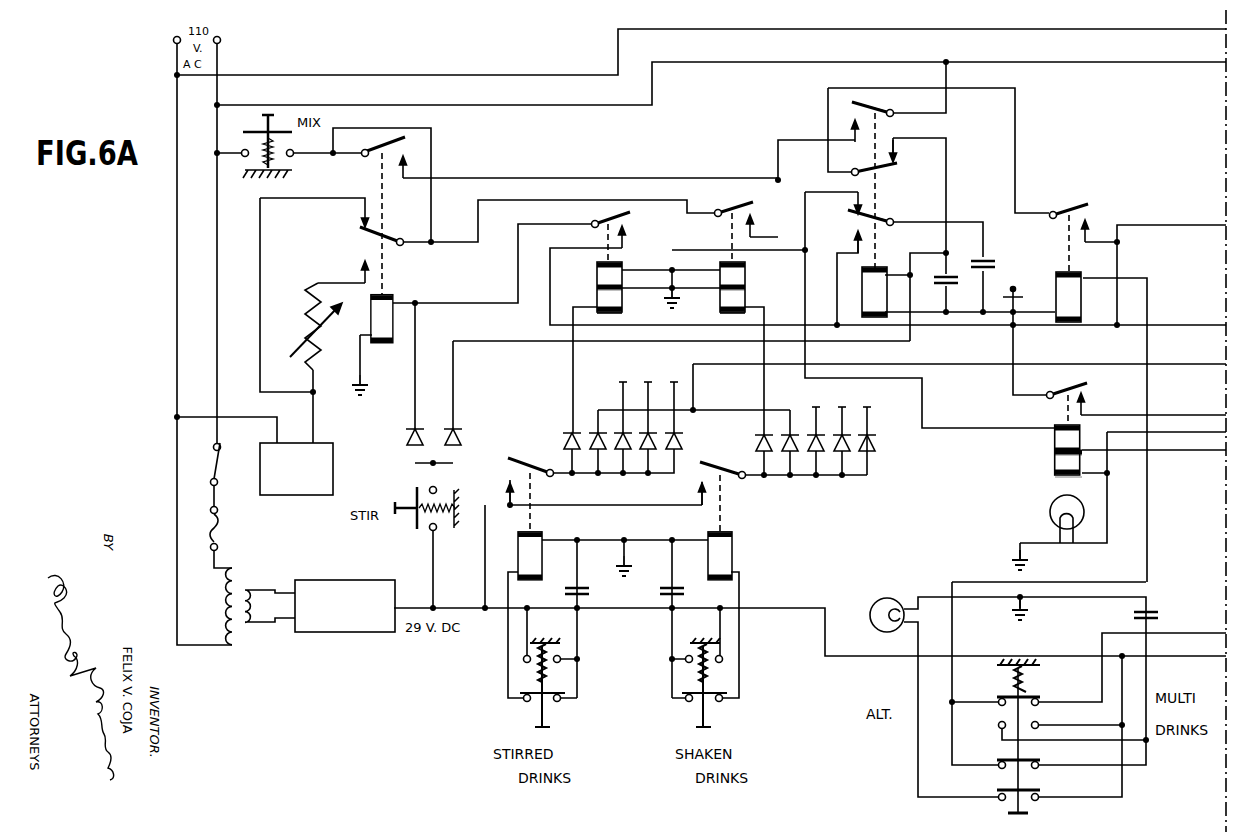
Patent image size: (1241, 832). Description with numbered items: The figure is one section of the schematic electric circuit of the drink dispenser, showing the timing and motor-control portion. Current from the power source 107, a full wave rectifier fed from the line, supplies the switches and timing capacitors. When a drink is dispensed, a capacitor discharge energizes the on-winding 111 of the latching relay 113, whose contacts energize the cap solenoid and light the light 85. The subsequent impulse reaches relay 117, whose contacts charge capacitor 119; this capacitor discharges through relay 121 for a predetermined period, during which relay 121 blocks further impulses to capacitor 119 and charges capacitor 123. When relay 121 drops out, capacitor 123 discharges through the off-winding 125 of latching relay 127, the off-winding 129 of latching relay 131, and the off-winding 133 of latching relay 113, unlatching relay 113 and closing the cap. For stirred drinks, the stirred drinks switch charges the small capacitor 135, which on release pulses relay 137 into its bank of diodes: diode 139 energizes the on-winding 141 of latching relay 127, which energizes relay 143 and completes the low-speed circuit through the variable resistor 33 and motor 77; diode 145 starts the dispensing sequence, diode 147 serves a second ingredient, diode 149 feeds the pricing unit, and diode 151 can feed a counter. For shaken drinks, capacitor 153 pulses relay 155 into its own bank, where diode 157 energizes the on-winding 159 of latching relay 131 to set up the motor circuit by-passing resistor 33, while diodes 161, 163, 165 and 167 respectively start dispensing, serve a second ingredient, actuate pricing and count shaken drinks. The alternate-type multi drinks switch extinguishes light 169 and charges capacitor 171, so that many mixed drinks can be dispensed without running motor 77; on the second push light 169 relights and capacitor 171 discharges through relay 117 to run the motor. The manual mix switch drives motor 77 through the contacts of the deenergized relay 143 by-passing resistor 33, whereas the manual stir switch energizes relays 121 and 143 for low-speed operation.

The variable resistor 33 is at (306, 317).
The motor 77 is at (333, 480).
The light 85 is at (1050, 517).
The power source 107 is at (340, 632).
The on-winding 111 is at (1056, 476).
The latching relay 113 is at (1054, 462).
The relay 117 is at (1053, 292).
The capacitor 119 is at (940, 291).
The relay 121 is at (862, 298).
The capacitor 123 is at (983, 260).
The off-winding 125 is at (597, 274).
The latching relay 127 is at (597, 292).
The off-winding 129 is at (745, 273).
The latching relay 131 is at (745, 293).
The off-winding 133 is at (1055, 438).
The capacitor 135 is at (585, 592).
The relay 137 is at (516, 552).
The diode 139 is at (561, 444).
The on-winding 141 is at (615, 309).
The relay 143 is at (371, 340).
The diode 145 is at (596, 425).
The diode 147 is at (622, 423).
The diode 149 is at (648, 424).
The diode 151 is at (678, 442).
The capacitor 153 is at (676, 592).
The relay 155 is at (732, 559).
The diode 157 is at (758, 444).
The on-winding 159 is at (720, 308).
The diode 161 is at (791, 470).
The diode 163 is at (816, 470).
The diode 165 is at (844, 470).
The diode 167 is at (873, 443).
The light 169 is at (893, 580).
The capacitor 171 is at (1134, 617).